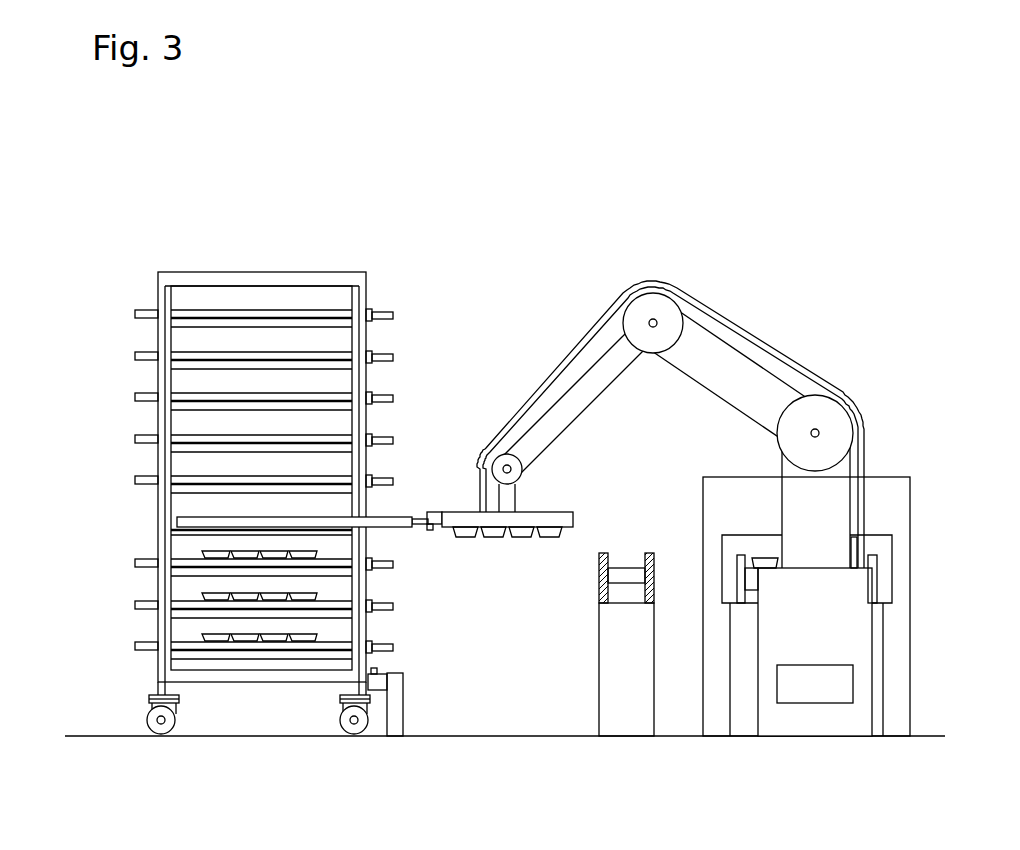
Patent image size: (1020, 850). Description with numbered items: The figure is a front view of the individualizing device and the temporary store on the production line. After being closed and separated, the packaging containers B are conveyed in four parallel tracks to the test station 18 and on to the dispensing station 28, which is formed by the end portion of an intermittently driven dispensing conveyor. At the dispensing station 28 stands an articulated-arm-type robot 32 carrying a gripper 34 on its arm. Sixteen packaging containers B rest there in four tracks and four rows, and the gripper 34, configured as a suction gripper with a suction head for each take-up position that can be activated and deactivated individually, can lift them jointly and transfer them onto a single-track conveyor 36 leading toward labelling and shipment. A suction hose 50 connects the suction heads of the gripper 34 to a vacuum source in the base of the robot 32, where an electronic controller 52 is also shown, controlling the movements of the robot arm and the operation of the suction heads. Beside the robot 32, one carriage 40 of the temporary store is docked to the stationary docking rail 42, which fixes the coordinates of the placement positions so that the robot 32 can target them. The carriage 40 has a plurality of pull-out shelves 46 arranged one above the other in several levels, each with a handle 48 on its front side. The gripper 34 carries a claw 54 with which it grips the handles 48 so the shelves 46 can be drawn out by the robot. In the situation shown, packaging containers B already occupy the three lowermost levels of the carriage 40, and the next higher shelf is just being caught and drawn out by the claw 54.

The test station 18 is at (890, 490).
The dispensing station 28 is at (759, 545).
The articulated-arm-type robot 32 is at (670, 370).
The gripper 34 is at (553, 514).
The single-track conveyor 36 is at (630, 545).
The carriage 40 is at (264, 262).
The docking rail 42 is at (403, 708).
The pull-out shelves 46 is at (178, 522).
The handle 48 is at (387, 308).
The suction hose 50 is at (768, 335).
The electronic controller 52 is at (822, 703).
The claw 54 is at (440, 510).
The packaging containers B is at (520, 536).